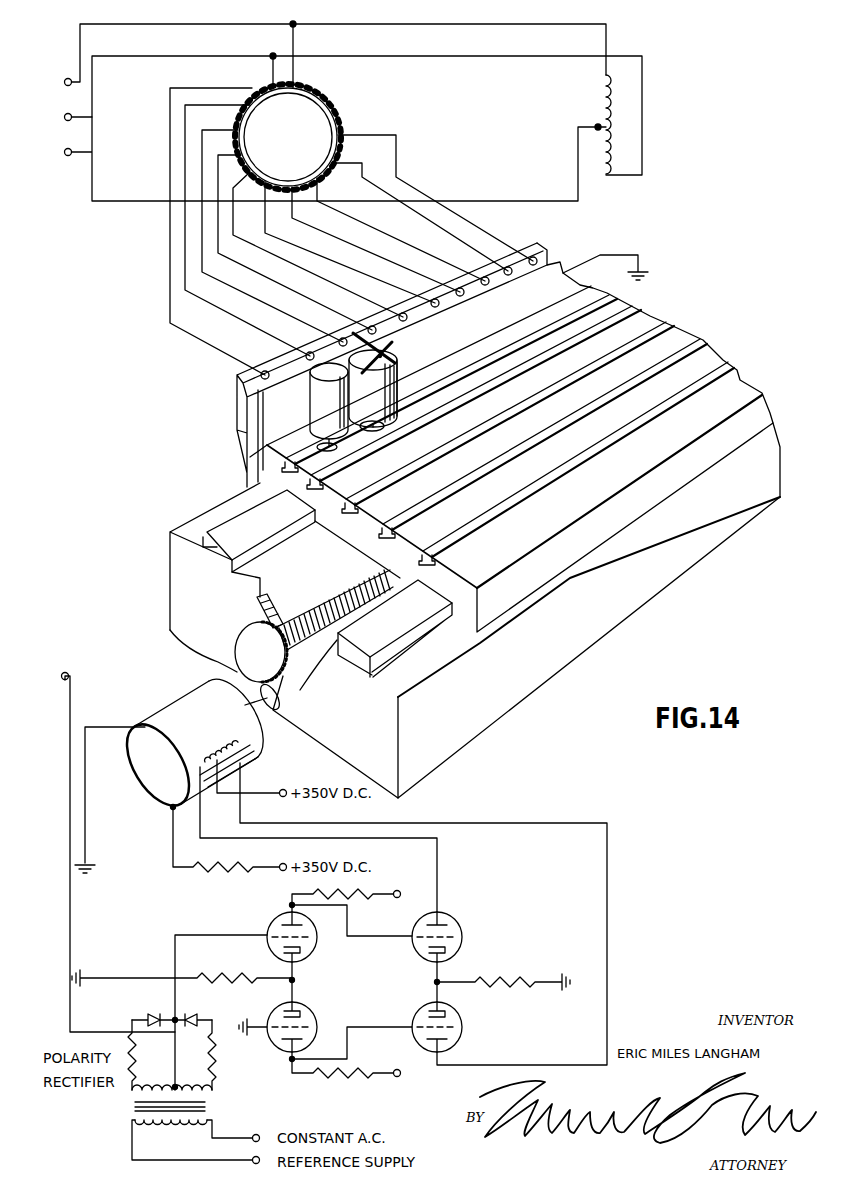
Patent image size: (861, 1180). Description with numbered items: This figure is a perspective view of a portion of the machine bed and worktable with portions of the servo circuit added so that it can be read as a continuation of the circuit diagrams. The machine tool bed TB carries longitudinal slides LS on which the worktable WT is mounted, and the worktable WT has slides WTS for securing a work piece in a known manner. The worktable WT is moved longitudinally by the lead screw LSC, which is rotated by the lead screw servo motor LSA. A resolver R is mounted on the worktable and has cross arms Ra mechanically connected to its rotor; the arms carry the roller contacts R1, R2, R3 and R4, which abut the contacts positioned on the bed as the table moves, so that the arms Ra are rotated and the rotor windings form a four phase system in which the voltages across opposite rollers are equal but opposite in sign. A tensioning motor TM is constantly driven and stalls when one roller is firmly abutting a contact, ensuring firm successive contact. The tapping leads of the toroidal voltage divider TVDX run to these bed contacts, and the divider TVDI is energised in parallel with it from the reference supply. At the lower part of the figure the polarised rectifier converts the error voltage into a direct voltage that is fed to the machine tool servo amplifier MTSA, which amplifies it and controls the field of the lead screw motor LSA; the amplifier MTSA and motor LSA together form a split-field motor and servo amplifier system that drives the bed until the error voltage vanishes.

The toroidal voltage divider TVDX is at (288, 137).
The toroidal voltage divider TVDI is at (569, 124).
The roller contact R1 is at (308, 350).
The cross arms Ra is at (341, 337).
The roller contact R4 is at (368, 345).
The roller contact R3 is at (400, 355).
The roller contact R2 is at (373, 390).
The resolver R is at (398, 386).
The tensioning motor TM is at (329, 407).
The machine tool bed TB is at (222, 522).
The longitudinal slides LS is at (218, 553).
The lead screw LSC is at (340, 600).
The lead screw servo motor LSA is at (177, 727).
The worktable WT is at (627, 510).
The worktable slides WTS is at (420, 512).
The machine tool servo amplifier MTSA is at (321, 984).